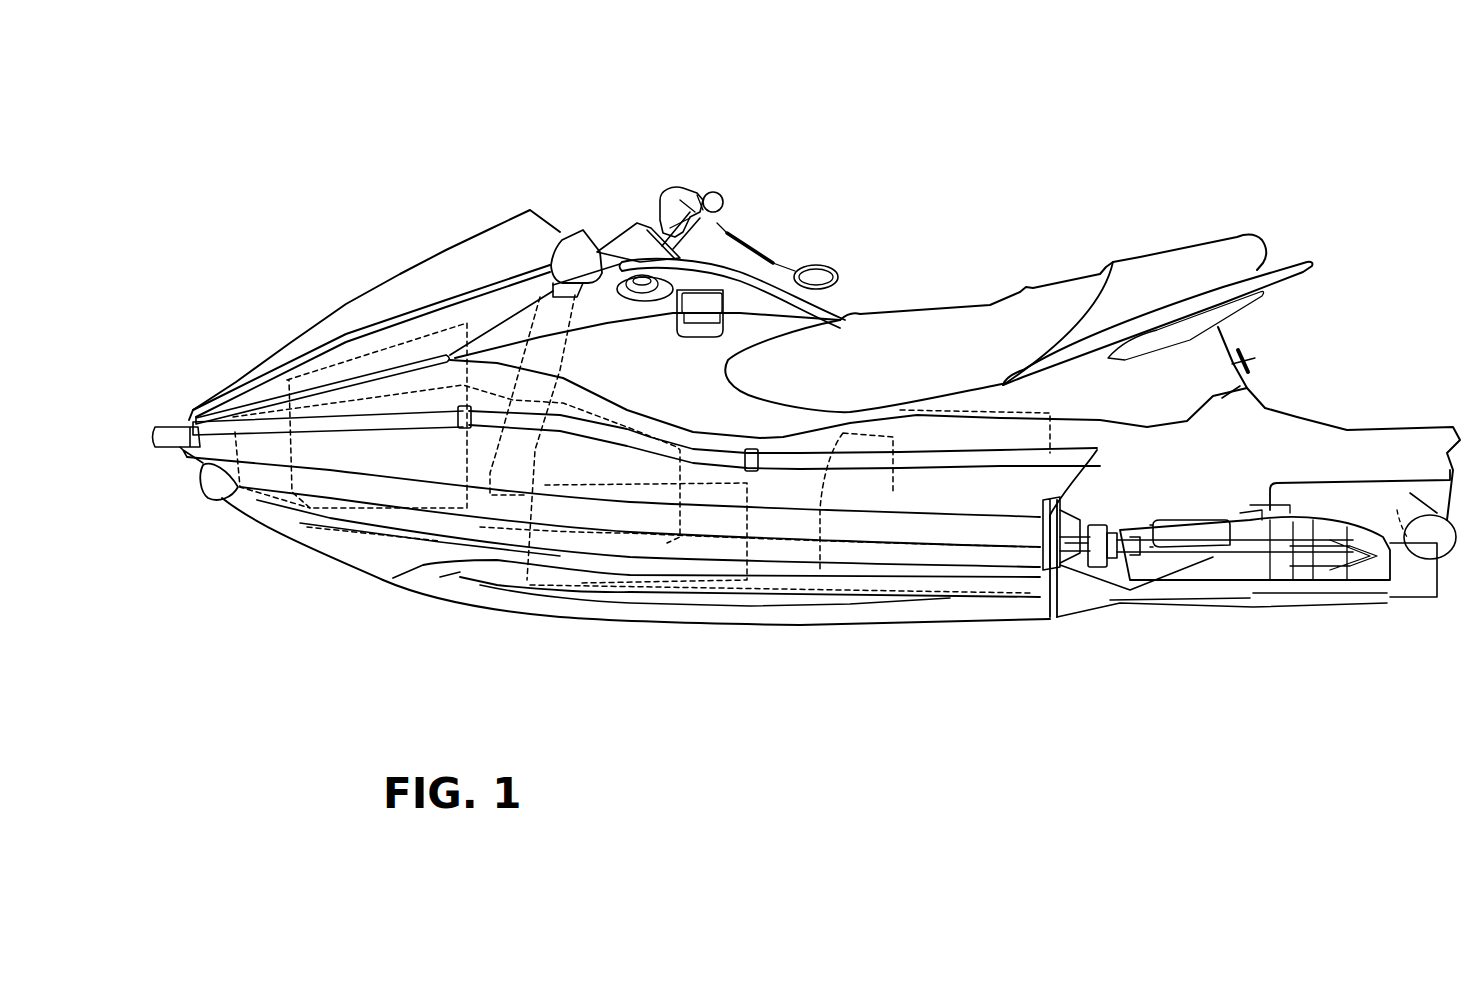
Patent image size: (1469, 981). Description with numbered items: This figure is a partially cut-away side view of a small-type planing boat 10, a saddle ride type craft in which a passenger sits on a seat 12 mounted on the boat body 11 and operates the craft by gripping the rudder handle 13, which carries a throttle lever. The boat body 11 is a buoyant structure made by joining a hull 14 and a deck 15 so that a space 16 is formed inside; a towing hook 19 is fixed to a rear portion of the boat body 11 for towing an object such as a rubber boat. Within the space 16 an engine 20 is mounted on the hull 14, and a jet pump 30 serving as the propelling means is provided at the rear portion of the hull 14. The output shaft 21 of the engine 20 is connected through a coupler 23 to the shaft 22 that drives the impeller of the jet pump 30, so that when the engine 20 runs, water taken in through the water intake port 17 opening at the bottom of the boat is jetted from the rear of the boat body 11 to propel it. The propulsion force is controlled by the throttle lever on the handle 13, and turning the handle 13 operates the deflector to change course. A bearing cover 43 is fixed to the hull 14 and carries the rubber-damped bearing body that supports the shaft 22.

The small-type planing boat 10 is at (550, 184).
The boat body 11 is at (1267, 343).
The seat 12 is at (888, 318).
The rudder handle 13 is at (716, 190).
The hull 14 is at (1000, 622).
The deck 15 is at (1213, 383).
The space 16 is at (797, 557).
The water intake port 17 is at (1173, 603).
The towing hook 19 is at (1233, 370).
The engine 20 is at (973, 410).
The output shaft 21 is at (1063, 565).
The shaft (drive shaft) 22 is at (1243, 553).
The coupler 23 is at (1095, 567).
The jet pump 30 is at (1317, 610).
The bearing cover 43 is at (1193, 520).